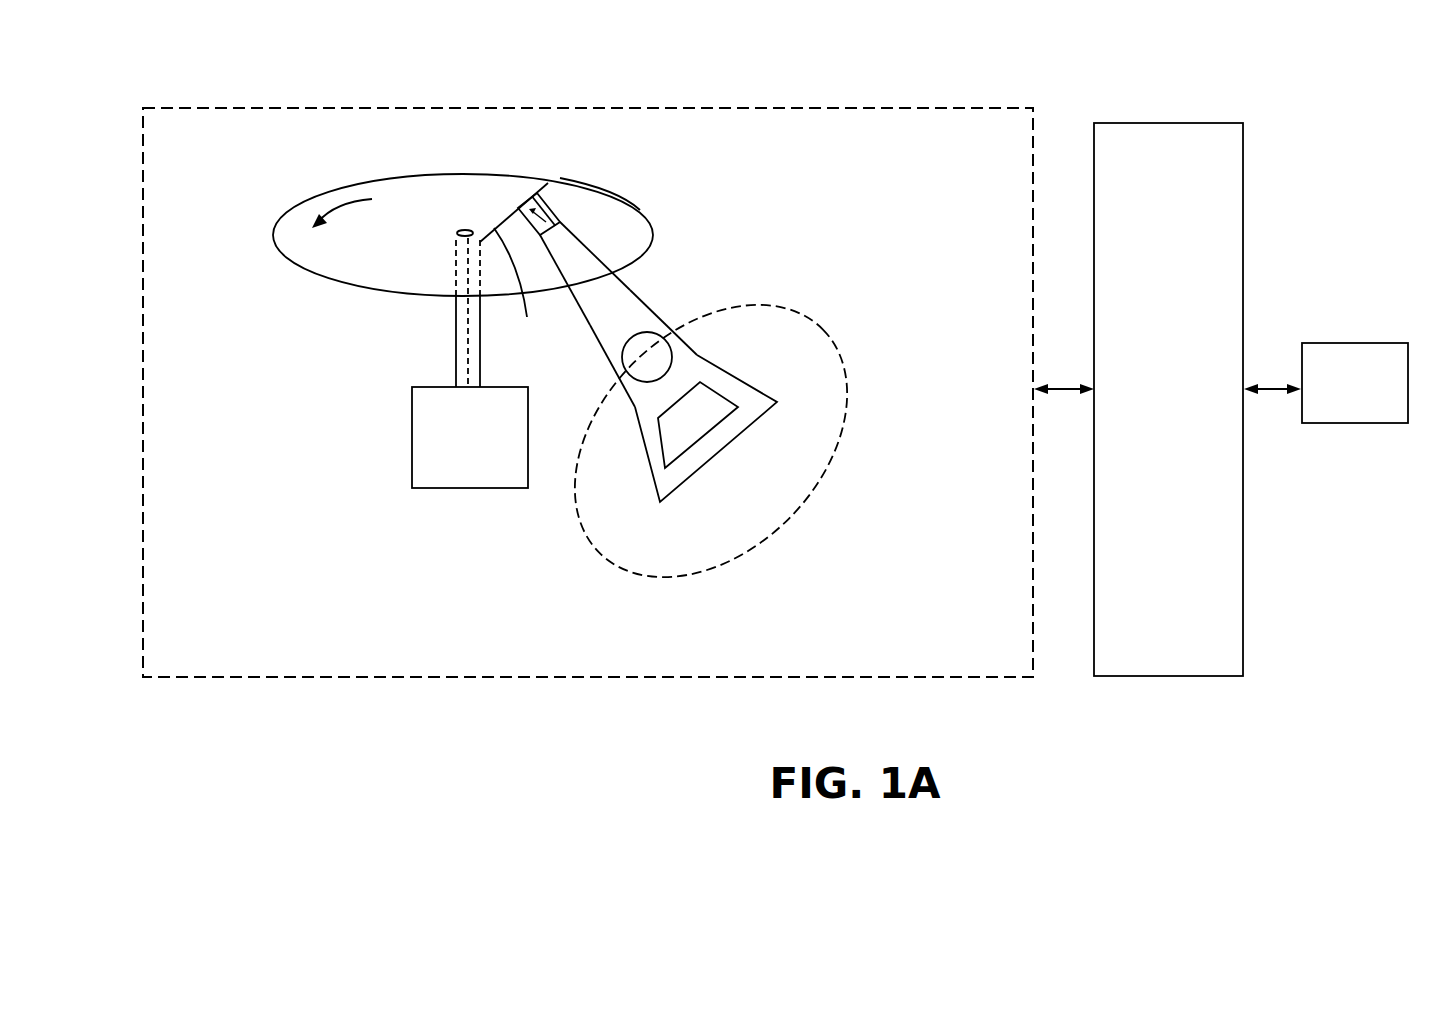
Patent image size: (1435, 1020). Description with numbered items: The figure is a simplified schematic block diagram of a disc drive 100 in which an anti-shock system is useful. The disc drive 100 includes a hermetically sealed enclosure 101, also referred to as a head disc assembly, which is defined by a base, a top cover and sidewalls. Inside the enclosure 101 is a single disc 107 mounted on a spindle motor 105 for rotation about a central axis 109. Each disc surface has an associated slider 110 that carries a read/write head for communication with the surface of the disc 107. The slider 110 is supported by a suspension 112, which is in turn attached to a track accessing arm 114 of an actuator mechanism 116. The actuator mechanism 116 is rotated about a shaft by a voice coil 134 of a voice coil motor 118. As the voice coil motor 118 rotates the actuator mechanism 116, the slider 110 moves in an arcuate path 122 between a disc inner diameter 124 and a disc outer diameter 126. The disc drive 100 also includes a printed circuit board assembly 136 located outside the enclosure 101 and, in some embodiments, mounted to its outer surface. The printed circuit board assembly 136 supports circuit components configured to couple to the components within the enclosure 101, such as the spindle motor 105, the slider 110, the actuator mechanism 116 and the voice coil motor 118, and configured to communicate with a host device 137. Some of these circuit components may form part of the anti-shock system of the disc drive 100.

The disc drive 100 is at (1212, 61).
The hermetically sealed enclosure 101 is at (681, 678).
The spindle motor 105 is at (412, 462).
The disc 107 is at (295, 243).
The central axis 109 is at (457, 302).
The slider 110 is at (518, 208).
The suspension 112 is at (573, 260).
The track accessing arm 114 is at (615, 305).
The actuator mechanism 116 is at (610, 360).
The voice coil motor 118 is at (661, 565).
The arcuate path 122 is at (519, 287).
The disc inner diameter 124 is at (456, 233).
The disc outer diameter 126 is at (605, 195).
The voice coil 134 is at (663, 473).
The printed circuit board assembly 136 is at (1243, 180).
The host device 137 is at (1350, 423).